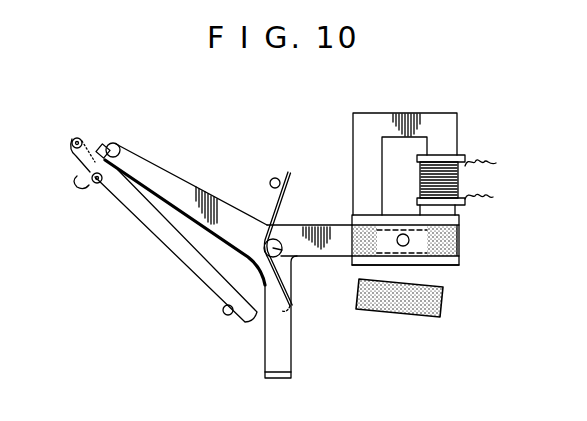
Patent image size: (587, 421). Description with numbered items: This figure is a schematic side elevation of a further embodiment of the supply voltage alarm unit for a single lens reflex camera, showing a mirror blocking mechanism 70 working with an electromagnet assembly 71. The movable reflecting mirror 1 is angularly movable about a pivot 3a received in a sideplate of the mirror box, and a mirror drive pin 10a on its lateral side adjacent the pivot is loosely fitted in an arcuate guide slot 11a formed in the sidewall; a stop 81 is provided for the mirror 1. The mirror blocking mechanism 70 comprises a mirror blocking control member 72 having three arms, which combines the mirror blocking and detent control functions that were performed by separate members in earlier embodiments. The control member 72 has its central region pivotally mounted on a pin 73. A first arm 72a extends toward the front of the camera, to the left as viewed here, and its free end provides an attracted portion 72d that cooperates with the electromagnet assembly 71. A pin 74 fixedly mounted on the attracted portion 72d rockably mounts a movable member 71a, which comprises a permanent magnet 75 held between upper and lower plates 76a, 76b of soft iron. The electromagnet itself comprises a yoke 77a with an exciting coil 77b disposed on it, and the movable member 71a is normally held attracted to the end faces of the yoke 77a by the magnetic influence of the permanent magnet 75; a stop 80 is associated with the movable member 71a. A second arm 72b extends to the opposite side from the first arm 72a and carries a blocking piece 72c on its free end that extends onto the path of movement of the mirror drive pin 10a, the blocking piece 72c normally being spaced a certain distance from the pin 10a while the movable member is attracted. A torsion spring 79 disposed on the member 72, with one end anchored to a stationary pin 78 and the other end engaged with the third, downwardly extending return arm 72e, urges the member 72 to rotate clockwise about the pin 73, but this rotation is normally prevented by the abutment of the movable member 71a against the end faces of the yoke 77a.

The movable reflecting mirror 1 is at (177, 252).
The pivot 3a is at (78, 138).
The mirror drive pin 10a is at (94, 186).
The arcuate guide slot 11a is at (75, 178).
The mirror blocking mechanism 70 is at (324, 193).
The electromagnet assembly 71 is at (468, 126).
The movable member 71a is at (490, 254).
The mirror blocking control member 72 is at (305, 248).
The first arm 72a is at (345, 258).
The second arm 72b is at (155, 166).
The blocking piece 72c is at (118, 145).
The attracted portion 72d is at (463, 245).
The return arm 72e is at (279, 352).
The pin 73 is at (290, 259).
The pin 74 is at (400, 234).
The permanent magnet 75 is at (352, 240).
The upper plate 76a is at (458, 218).
The lower plate 76b is at (457, 267).
The yoke 77a is at (409, 113).
The exciting coil 77b is at (462, 186).
The stationary pin 78 is at (271, 180).
The torsion spring 79 is at (265, 281).
The stop 80 is at (401, 311).
The stop 81 is at (223, 308).